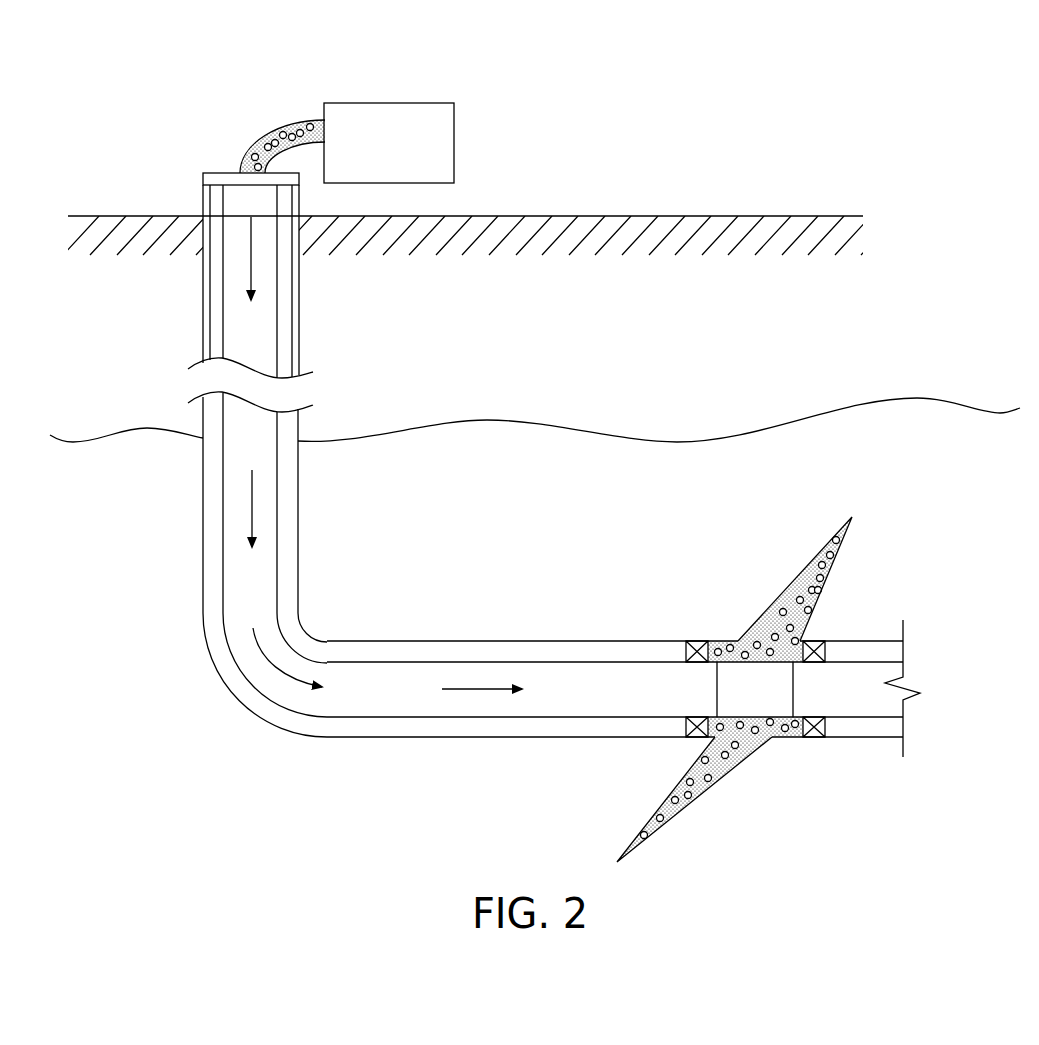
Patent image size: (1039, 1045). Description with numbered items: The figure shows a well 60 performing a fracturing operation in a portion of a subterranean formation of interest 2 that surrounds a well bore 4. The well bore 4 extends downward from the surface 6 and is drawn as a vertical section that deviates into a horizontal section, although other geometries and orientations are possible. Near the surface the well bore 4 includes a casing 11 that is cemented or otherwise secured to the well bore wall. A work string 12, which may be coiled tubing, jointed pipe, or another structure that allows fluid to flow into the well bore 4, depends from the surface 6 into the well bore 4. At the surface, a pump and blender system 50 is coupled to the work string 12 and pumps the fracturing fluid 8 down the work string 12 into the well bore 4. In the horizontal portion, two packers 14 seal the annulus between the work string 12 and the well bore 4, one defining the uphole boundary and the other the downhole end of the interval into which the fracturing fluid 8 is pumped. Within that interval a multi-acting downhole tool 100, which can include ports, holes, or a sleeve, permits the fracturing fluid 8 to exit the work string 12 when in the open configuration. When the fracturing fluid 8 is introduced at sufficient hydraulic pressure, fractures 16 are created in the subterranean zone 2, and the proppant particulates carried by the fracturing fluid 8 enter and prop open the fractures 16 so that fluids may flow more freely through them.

The subterranean formation 2 is at (511, 487).
The well bore 4 is at (217, 312).
The surface 6 is at (650, 216).
The fracturing fluid 8 is at (268, 142).
The casing 11 is at (202, 337).
The work string 12 is at (223, 554).
The packers 14 is at (695, 640).
The fractures 16 is at (792, 562).
The pump and blender system 50 is at (388, 103).
The well 60 is at (225, 735).
The multi-acting downhole tool 100 is at (755, 682).